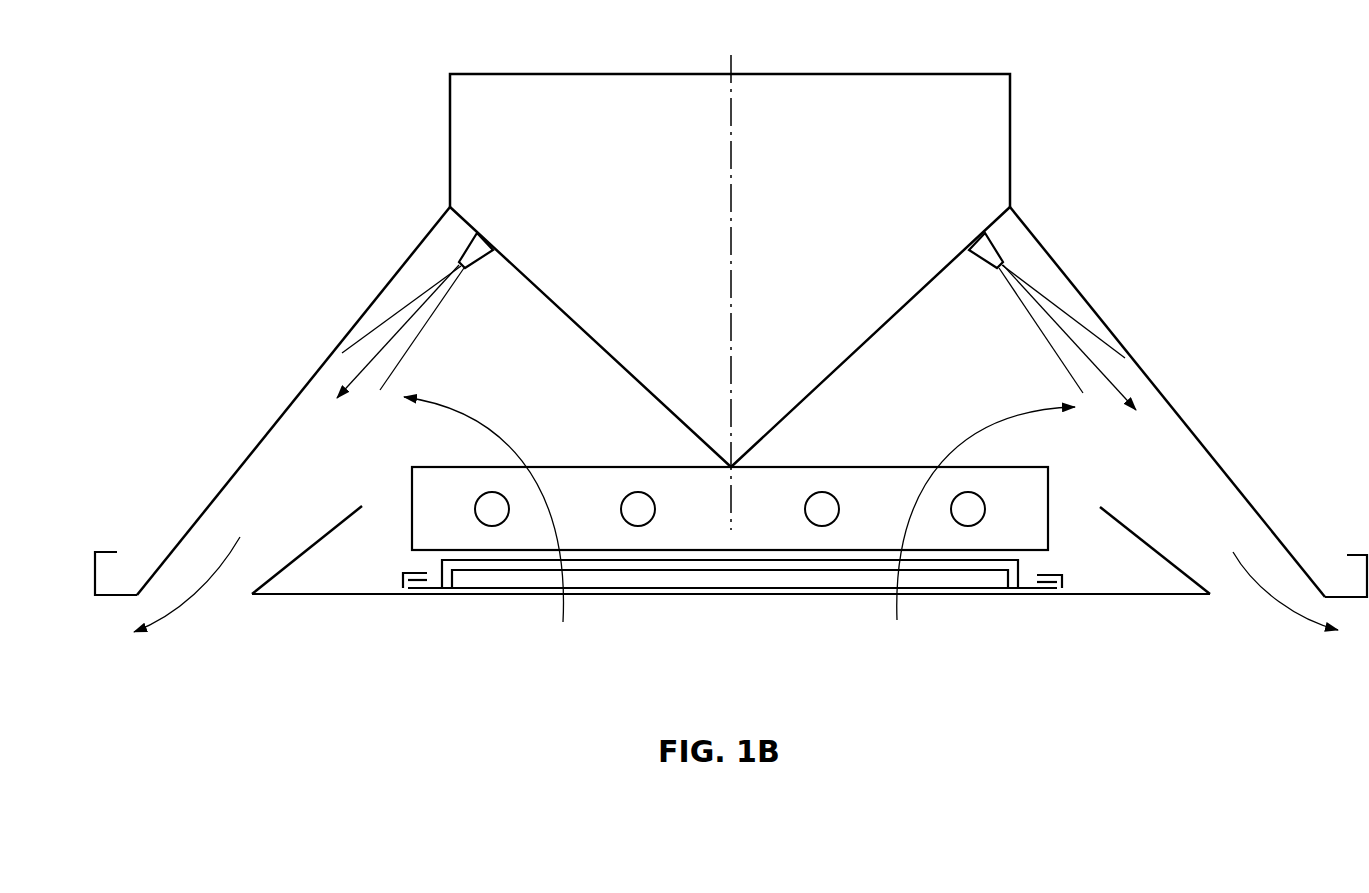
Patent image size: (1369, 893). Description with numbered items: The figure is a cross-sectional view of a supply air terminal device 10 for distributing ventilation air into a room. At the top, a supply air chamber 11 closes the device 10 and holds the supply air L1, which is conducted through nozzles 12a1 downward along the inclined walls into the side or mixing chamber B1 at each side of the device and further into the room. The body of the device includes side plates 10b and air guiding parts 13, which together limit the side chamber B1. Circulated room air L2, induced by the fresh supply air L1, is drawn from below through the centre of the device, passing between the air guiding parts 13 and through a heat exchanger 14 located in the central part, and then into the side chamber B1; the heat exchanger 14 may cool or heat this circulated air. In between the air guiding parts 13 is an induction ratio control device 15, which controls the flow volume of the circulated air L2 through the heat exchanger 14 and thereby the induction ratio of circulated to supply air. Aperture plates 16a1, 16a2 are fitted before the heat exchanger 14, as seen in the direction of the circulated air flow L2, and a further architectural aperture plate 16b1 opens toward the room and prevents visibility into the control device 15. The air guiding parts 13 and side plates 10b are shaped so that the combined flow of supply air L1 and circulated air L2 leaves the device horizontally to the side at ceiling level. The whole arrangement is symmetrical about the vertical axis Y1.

The supply air terminal device 10 is at (1134, 103).
The supply air chamber 11 is at (600, 140).
The side plates 10b is at (267, 432).
The nozzle 12a1 is at (475, 245).
The air guiding part 13 is at (280, 572).
The heat exchanger 14 is at (867, 485).
The induction ratio control device 15 is at (653, 584).
The aperture plate 16a1 is at (417, 588).
The aperture plate 16a2 is at (513, 572).
The architectural third aperture plate 16b1 is at (743, 594).
The side chamber B1 is at (332, 482).
The supply air flow L1 is at (383, 349).
The circulated air flow L2 is at (490, 423).
The vertical axis Y1 is at (733, 212).